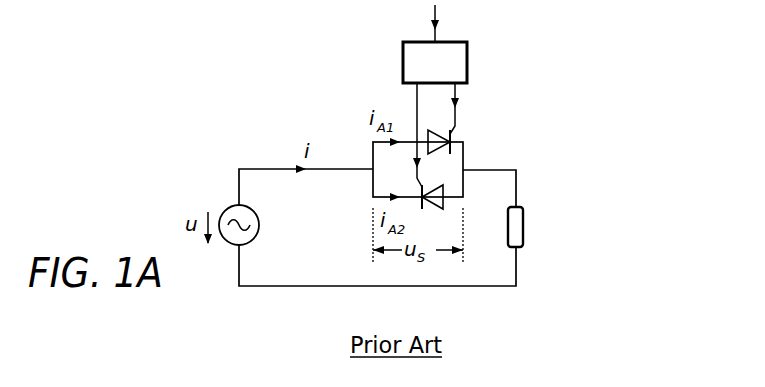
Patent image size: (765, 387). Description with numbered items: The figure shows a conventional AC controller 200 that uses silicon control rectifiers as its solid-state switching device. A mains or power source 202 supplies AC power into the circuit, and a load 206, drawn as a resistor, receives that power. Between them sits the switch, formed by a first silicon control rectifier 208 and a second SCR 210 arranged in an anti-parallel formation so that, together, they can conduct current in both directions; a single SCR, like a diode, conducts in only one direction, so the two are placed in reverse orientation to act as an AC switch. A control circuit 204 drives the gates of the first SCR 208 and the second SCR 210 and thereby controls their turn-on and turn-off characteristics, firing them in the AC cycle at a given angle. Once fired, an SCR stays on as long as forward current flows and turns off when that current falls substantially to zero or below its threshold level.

The AC controller 200 is at (623, 59).
The power source 202 is at (198, 202).
The control circuit 204 is at (437, 103).
The load 206 is at (562, 239).
The first silicon control rectifier 208 is at (493, 122).
The second SCR 210 is at (425, 194).